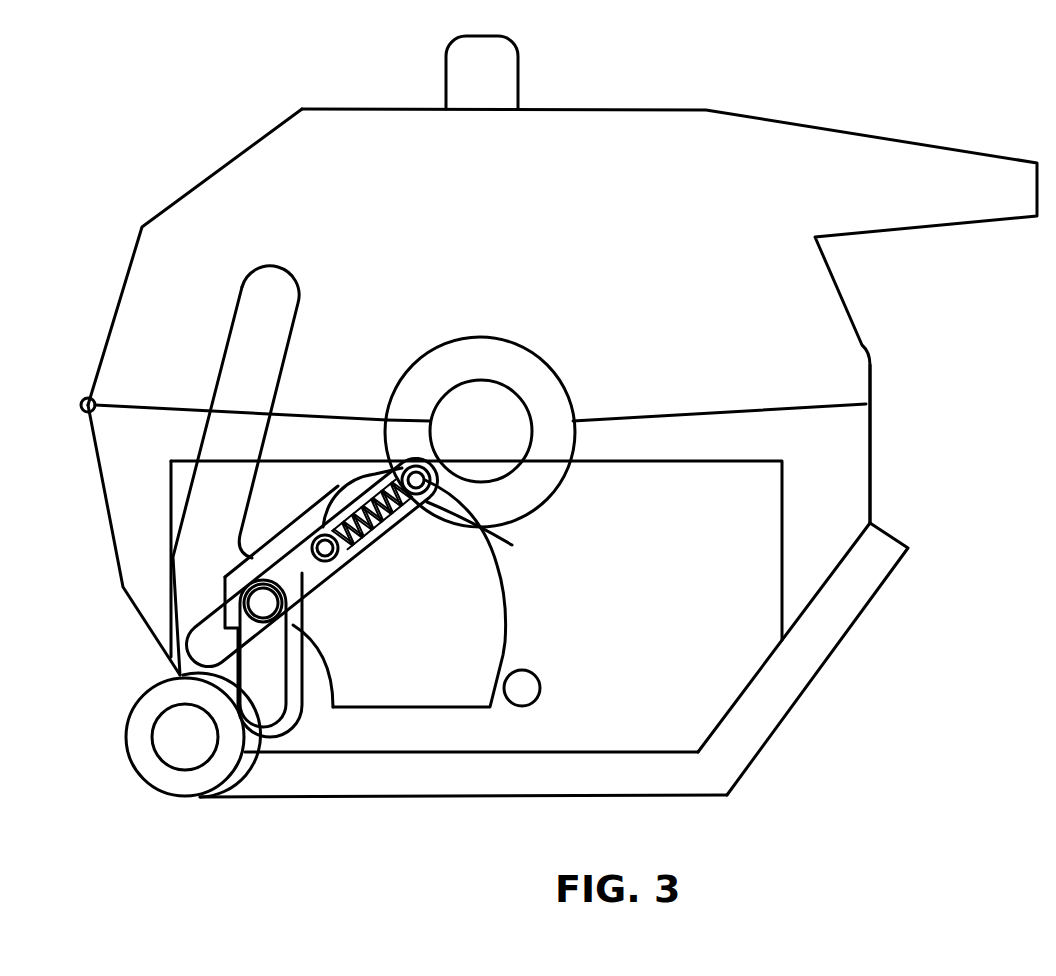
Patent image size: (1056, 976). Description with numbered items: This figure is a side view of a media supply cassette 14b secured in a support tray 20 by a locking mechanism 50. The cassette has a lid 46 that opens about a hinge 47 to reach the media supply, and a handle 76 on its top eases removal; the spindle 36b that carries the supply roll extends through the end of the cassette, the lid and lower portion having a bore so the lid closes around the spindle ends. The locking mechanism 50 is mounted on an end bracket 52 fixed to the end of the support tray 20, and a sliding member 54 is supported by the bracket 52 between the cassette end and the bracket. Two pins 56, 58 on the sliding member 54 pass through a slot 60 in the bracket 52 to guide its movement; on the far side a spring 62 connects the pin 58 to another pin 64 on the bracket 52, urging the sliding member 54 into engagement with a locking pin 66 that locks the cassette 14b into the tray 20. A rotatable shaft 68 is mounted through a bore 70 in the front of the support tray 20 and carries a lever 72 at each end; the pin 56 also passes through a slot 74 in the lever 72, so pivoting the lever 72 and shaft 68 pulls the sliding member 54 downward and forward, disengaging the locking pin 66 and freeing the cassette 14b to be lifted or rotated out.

The supply cassette 14b is at (870, 376).
The support tray 20 is at (800, 690).
The spindle 36b is at (512, 387).
The lid 46 is at (794, 121).
The hinge 47 is at (88, 398).
The locking mechanism 50 is at (92, 613).
The end bracket 52 is at (757, 461).
The sliding member 54 is at (503, 607).
The pin 56 is at (268, 568).
The pin 58 is at (359, 471).
The slot 60 is at (322, 588).
The spring 62 is at (383, 538).
The pin 64 is at (472, 516).
The locking pin 66 is at (541, 688).
The rotatable shaft 68 is at (192, 762).
The bore 70 is at (155, 712).
The lever 72 is at (238, 285).
The lever slot 74 is at (267, 753).
The handle 76 is at (518, 46).